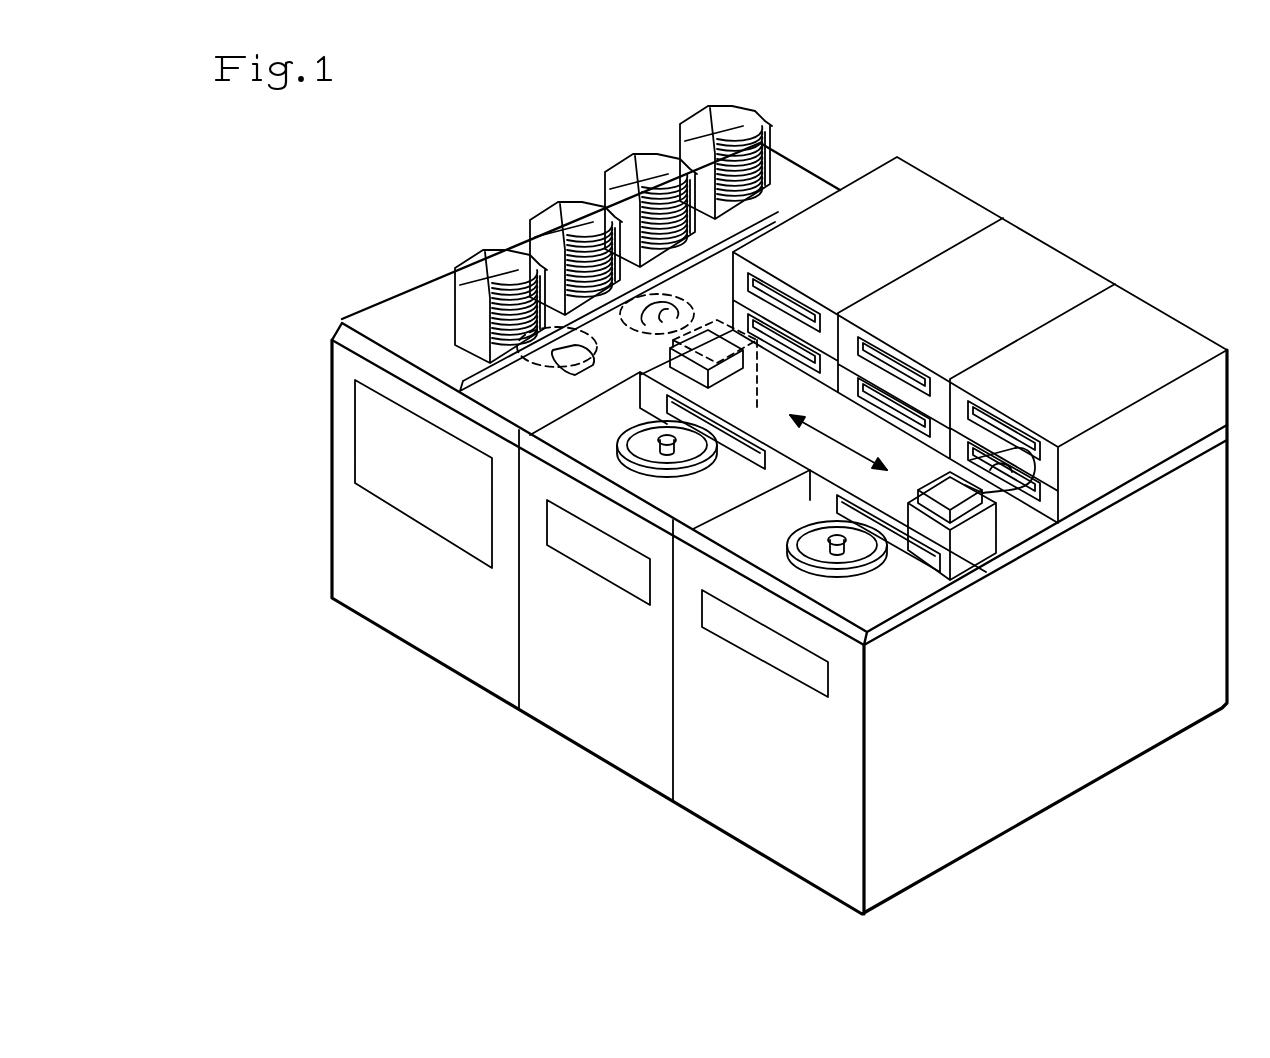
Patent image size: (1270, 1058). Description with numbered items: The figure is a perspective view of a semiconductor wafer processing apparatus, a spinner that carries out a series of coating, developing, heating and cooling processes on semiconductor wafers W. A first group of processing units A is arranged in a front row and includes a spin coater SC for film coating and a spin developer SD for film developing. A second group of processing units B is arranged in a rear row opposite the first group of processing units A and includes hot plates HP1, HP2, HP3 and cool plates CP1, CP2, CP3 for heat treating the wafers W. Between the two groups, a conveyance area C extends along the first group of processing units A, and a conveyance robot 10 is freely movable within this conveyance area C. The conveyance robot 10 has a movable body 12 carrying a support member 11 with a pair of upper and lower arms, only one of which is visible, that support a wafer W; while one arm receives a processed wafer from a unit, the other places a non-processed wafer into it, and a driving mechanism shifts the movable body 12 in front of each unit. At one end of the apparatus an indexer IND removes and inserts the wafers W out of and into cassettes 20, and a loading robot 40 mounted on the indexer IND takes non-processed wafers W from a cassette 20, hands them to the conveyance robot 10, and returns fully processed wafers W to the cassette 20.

The conveyance robot 10 is at (1003, 587).
The first group of processing units A is at (806, 931).
The second group of processing units B is at (1237, 336).
The indexer IND is at (438, 653).
The spin coater SC is at (572, 730).
The spin developer SD is at (722, 820).
The hot plate HP1 is at (771, 296).
The cool plate CP1 is at (802, 343).
The hot plate HP2 is at (880, 360).
The cool plate CP2 is at (913, 407).
The hot plate HP3 is at (996, 420).
The cool plate CP3 is at (1036, 447).
The cassette 20 is at (482, 262).
The semiconductor wafer W is at (476, 320).
The loading robot 40 is at (578, 378).
The support member 11 is at (997, 497).
The movable body 12 is at (985, 537).
The conveyance area C is at (893, 483).